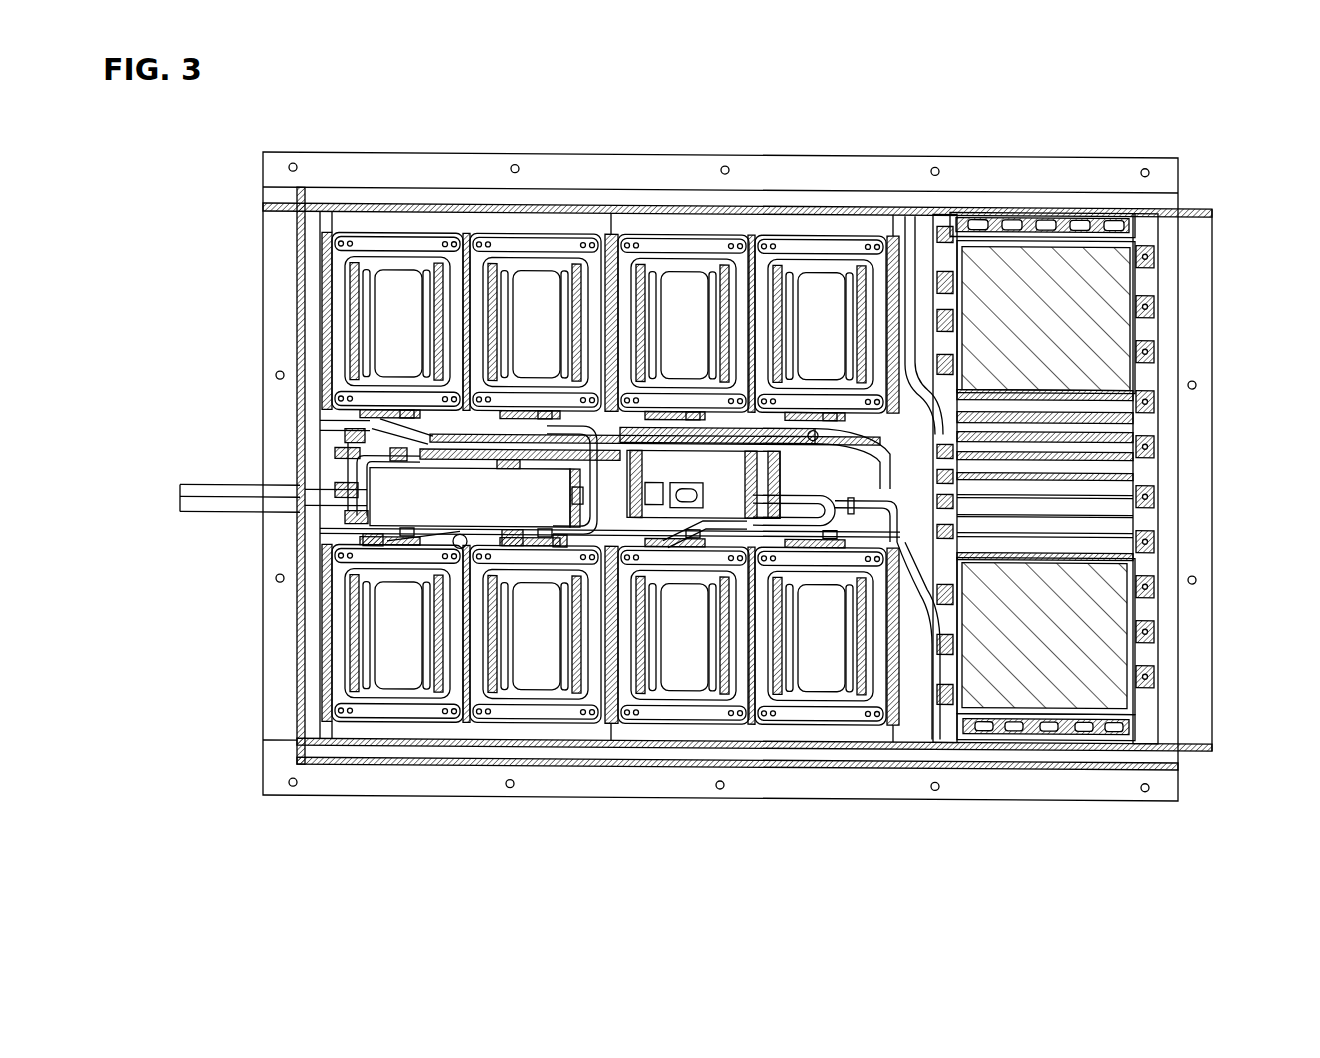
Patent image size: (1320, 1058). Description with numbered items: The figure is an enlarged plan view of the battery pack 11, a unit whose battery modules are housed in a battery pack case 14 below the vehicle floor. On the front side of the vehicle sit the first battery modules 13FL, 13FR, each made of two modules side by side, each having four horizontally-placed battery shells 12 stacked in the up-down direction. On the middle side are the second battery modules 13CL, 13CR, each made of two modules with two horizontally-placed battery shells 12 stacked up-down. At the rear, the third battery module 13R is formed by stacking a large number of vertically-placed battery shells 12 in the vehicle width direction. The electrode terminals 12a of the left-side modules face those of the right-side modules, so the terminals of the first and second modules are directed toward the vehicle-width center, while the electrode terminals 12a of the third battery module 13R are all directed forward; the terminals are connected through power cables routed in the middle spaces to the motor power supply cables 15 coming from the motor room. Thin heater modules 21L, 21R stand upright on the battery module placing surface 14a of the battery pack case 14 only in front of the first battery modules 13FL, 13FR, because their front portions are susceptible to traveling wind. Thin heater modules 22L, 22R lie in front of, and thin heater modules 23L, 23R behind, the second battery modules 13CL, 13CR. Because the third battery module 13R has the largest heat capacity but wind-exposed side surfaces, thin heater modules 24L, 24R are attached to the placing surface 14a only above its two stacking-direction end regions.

The battery pack 11 is at (1144, 148).
The battery shell 12 is at (1140, 231).
The electrode terminal 12a is at (407, 382).
The first battery module 13FR is at (530, 225).
The first battery module 13FL is at (535, 732).
The second battery module 13CR is at (818, 224).
The second battery module 13CL is at (843, 732).
The third battery module 13R is at (1000, 210).
The battery pack case 14 is at (1072, 150).
The battery module placing surface 14a is at (667, 220).
The motor power supply cable 15 is at (215, 515).
The thin heater module 21R is at (330, 232).
The thin heater module 21L is at (331, 724).
The thin heater module 22R is at (602, 230).
The thin heater module 22L is at (602, 742).
The thin heater module 23R is at (893, 228).
The thin heater module 23L is at (894, 742).
The thin heater module 24R is at (1090, 287).
The thin heater module 24L is at (1092, 636).